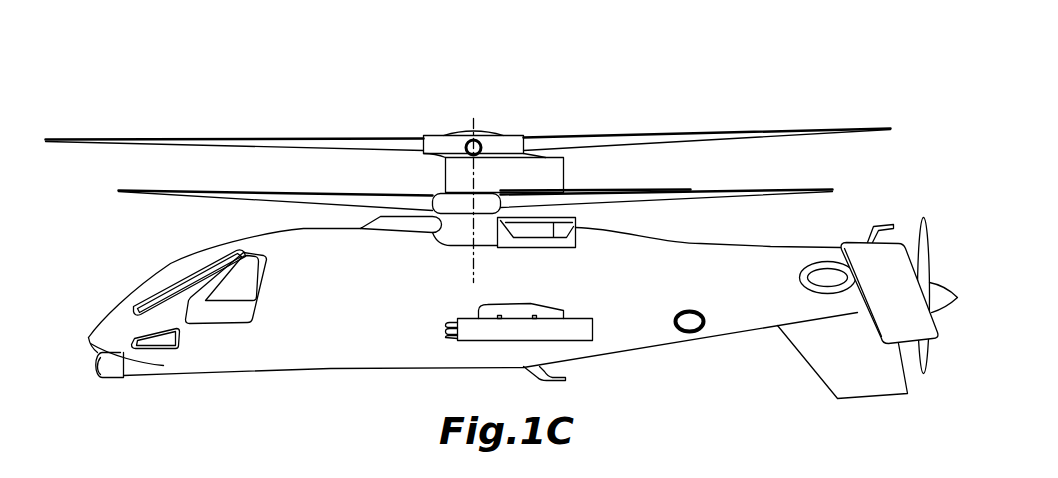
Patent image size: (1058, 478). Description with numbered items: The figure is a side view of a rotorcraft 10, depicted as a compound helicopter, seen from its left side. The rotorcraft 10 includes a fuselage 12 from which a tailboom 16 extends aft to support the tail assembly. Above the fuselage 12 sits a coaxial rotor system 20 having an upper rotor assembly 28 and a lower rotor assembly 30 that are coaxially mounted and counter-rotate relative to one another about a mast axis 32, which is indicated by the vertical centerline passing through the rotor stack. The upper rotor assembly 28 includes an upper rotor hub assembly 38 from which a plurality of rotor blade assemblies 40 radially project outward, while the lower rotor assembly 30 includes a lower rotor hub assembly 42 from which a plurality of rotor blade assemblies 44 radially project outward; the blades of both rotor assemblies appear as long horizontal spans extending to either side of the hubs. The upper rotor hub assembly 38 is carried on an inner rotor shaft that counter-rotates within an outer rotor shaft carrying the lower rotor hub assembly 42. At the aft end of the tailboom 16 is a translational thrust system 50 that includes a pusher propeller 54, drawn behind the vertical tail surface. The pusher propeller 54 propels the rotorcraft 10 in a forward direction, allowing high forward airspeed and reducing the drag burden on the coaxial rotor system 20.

The rotorcraft 10 is at (133, 259).
The fuselage 12 is at (293, 350).
The tailboom 16 is at (718, 328).
The coaxial rotor system 20 is at (415, 110).
The upper rotor assembly 28 is at (512, 126).
The lower rotor assembly 30 is at (416, 186).
The mast axis 32 is at (470, 122).
The upper rotor hub assembly 38 is at (440, 134).
The rotor blade assemblies 40 is at (640, 140).
The lower rotor hub assembly 42 is at (447, 180).
The rotor blade assemblies 44 is at (797, 190).
The translational thrust system 50 is at (912, 206).
The pusher propeller 54 is at (942, 280).